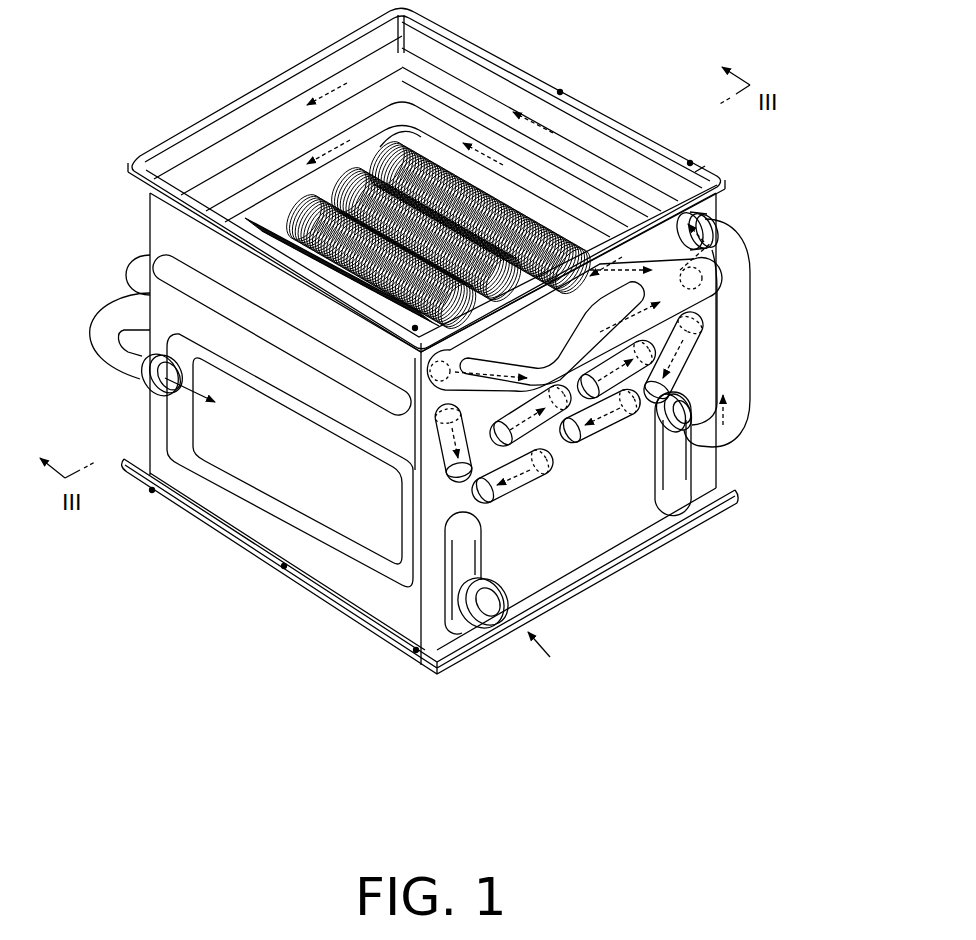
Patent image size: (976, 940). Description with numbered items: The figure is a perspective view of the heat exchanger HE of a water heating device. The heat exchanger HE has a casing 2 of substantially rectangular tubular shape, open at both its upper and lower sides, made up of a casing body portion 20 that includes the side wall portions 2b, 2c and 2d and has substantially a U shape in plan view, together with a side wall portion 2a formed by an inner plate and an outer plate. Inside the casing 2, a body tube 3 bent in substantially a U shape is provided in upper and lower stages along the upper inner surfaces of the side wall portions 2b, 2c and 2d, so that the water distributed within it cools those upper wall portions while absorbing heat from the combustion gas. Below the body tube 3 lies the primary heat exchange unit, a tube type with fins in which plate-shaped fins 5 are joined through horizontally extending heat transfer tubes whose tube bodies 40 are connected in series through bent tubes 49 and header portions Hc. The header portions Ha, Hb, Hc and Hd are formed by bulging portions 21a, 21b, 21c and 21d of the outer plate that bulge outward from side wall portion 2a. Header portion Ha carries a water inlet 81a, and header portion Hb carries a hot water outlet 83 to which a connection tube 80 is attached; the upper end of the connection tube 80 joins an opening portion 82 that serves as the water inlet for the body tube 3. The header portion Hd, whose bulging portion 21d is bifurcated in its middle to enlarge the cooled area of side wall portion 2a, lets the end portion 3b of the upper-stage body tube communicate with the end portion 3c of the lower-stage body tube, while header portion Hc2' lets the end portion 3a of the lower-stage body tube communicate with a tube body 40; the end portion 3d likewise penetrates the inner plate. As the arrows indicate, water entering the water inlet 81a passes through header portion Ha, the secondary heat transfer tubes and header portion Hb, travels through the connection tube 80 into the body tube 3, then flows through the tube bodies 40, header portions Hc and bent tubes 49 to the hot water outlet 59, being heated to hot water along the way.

The heat exchanger HE is at (130, 78).
The casing 2 is at (262, 77).
The casing body portion 20 is at (345, 40).
The side wall portion 2a is at (583, 542).
The side wall portion 2b is at (577, 130).
The side wall portion 2c is at (222, 130).
The side wall portion 2d is at (293, 501).
The body tube 3 is at (457, 137).
The end portion of body tube 3a is at (440, 428).
The end portion of body tube 3b is at (433, 362).
The end portion of body tube 3c is at (712, 262).
The end portion of body tube 3d is at (700, 221).
The fins 5 is at (420, 160).
The bulging portion 21a is at (467, 563).
The bulging portion 21b is at (668, 492).
The bulging portions 21c is at (605, 368).
The bulging portion 21d is at (700, 170).
The tube bodies 40 is at (440, 463).
The bent tubes 49 is at (137, 265).
The hot water outlet 59 is at (158, 400).
The connection tube 80 is at (745, 322).
The water inlet 81a is at (483, 626).
The opening portion 82 is at (712, 215).
The hot water outlet 83 is at (690, 395).
The header portion Ha is at (490, 548).
The header portion Hb is at (658, 461).
The header portions Hc is at (568, 455).
The header portion Hc2' is at (470, 492).
The header portion Hd is at (597, 268).